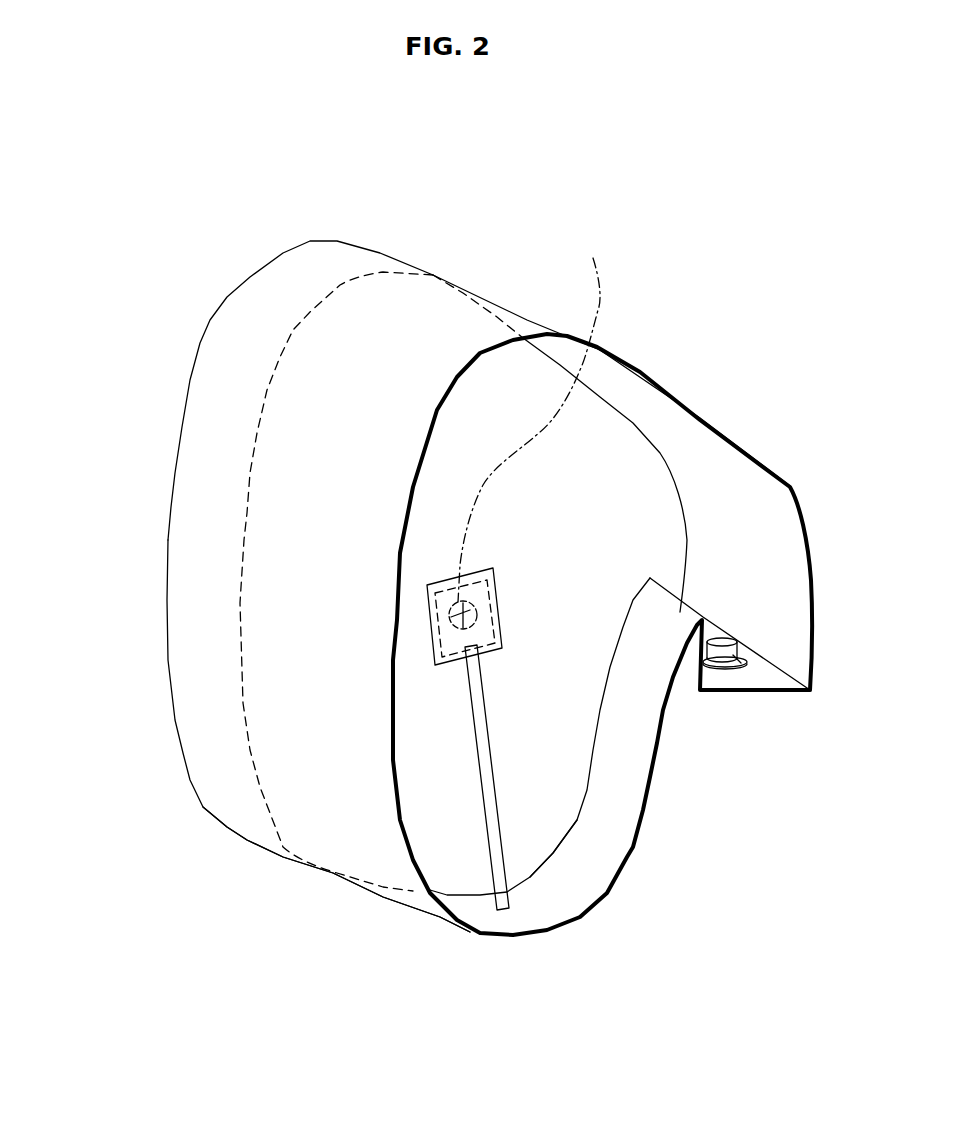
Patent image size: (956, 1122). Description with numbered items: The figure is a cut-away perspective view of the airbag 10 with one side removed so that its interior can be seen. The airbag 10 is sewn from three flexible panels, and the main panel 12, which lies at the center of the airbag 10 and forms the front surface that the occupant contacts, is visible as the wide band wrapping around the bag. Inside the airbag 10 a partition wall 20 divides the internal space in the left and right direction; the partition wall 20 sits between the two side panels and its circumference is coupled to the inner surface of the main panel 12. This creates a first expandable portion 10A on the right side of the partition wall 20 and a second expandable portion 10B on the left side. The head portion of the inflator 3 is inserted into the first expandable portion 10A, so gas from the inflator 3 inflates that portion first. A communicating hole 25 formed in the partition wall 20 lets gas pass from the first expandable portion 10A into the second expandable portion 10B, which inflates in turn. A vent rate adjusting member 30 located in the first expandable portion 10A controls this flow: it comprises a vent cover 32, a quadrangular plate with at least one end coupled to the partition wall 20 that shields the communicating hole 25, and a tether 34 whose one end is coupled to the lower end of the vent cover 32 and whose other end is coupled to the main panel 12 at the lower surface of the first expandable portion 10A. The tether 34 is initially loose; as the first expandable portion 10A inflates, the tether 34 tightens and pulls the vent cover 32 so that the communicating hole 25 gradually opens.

The airbag 10 is at (228, 257).
The first expandable portion 10A is at (347, 817).
The second expandable portion 10B is at (227, 780).
The main panel 12 is at (615, 840).
The partition wall 20 is at (603, 487).
The communicating hole 25 is at (531, 417).
The inflator 3 is at (735, 660).
The vent rate adjusting member 30 is at (93, 475).
The vent cover 32 is at (450, 640).
The tether 34 is at (477, 713).